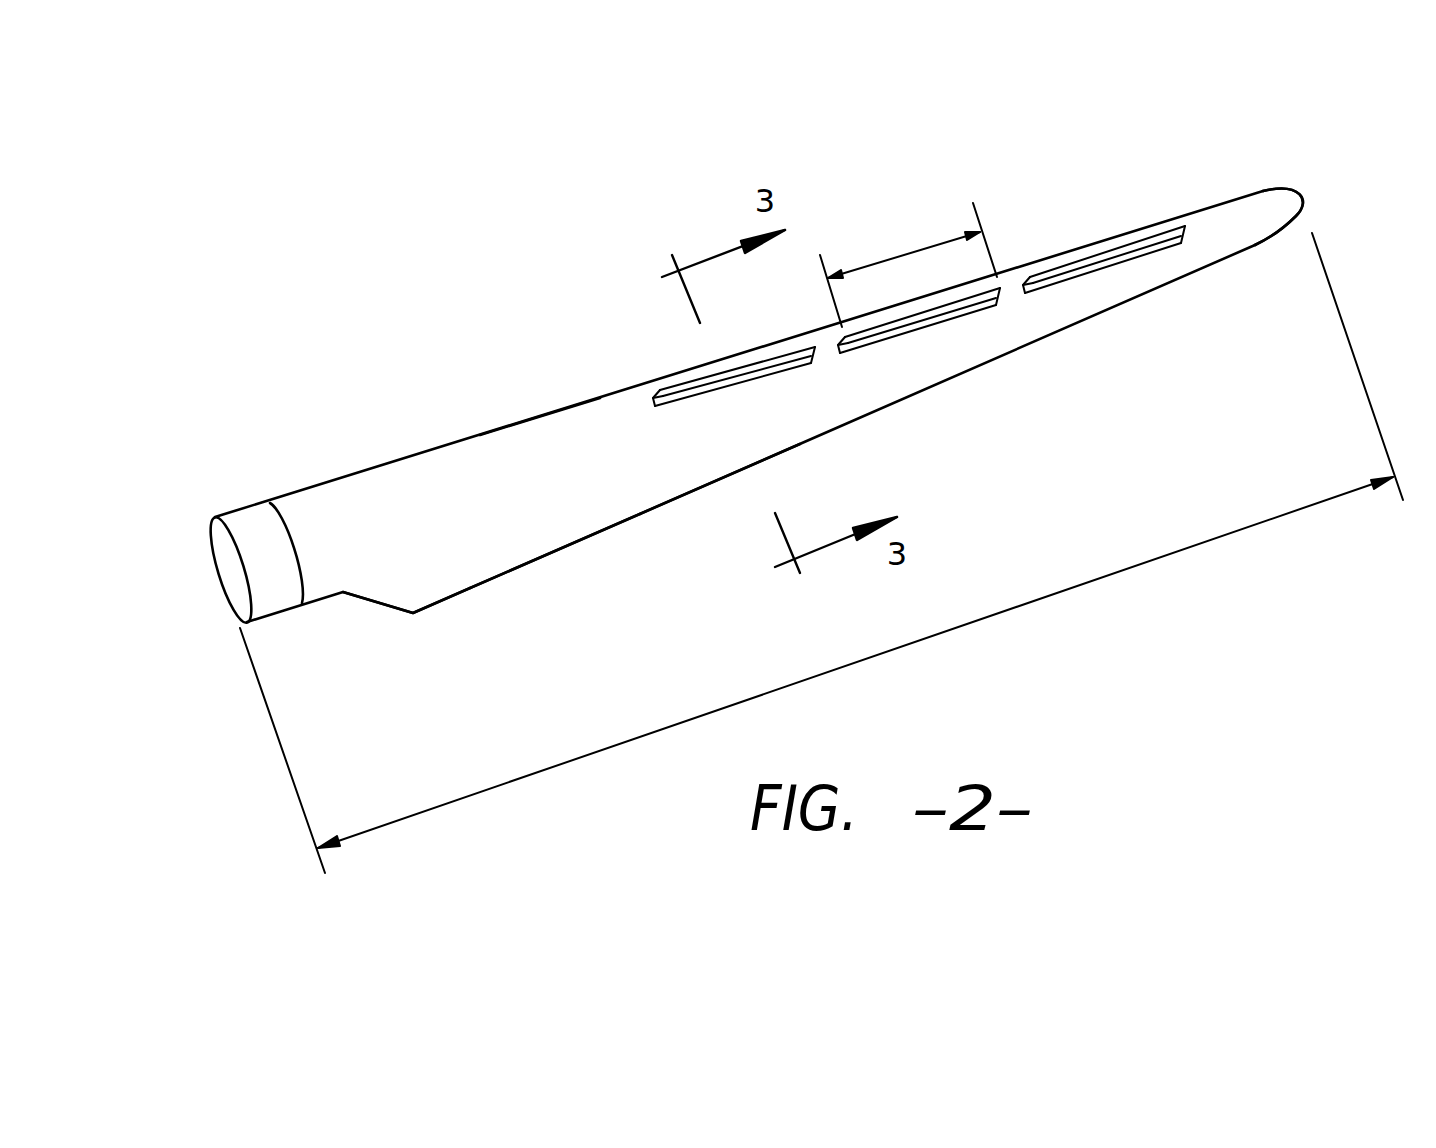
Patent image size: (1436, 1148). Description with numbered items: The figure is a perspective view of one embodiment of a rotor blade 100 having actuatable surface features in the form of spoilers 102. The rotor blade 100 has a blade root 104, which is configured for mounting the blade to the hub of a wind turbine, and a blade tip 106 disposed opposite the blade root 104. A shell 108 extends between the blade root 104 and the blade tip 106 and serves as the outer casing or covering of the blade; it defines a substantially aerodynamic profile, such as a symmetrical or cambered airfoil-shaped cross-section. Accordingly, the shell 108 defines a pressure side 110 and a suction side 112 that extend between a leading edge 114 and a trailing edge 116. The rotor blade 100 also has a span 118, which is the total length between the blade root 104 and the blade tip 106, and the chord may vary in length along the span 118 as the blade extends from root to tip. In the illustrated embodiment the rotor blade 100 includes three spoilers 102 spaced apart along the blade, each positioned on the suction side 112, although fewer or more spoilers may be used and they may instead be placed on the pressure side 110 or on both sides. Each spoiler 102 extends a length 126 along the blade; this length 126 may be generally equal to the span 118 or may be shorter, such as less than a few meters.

The rotor blade 100 is at (759, 405).
The spoiler 102 is at (778, 370).
The blade root 104 is at (240, 508).
The blade tip 106 is at (1302, 200).
The shell 108 is at (495, 538).
The pressure side 110 is at (587, 492).
The suction side 112 is at (427, 517).
The leading edge 114 is at (537, 417).
The trailing edge 116 is at (707, 495).
The span 118 is at (1042, 600).
The length 126 is at (898, 257).